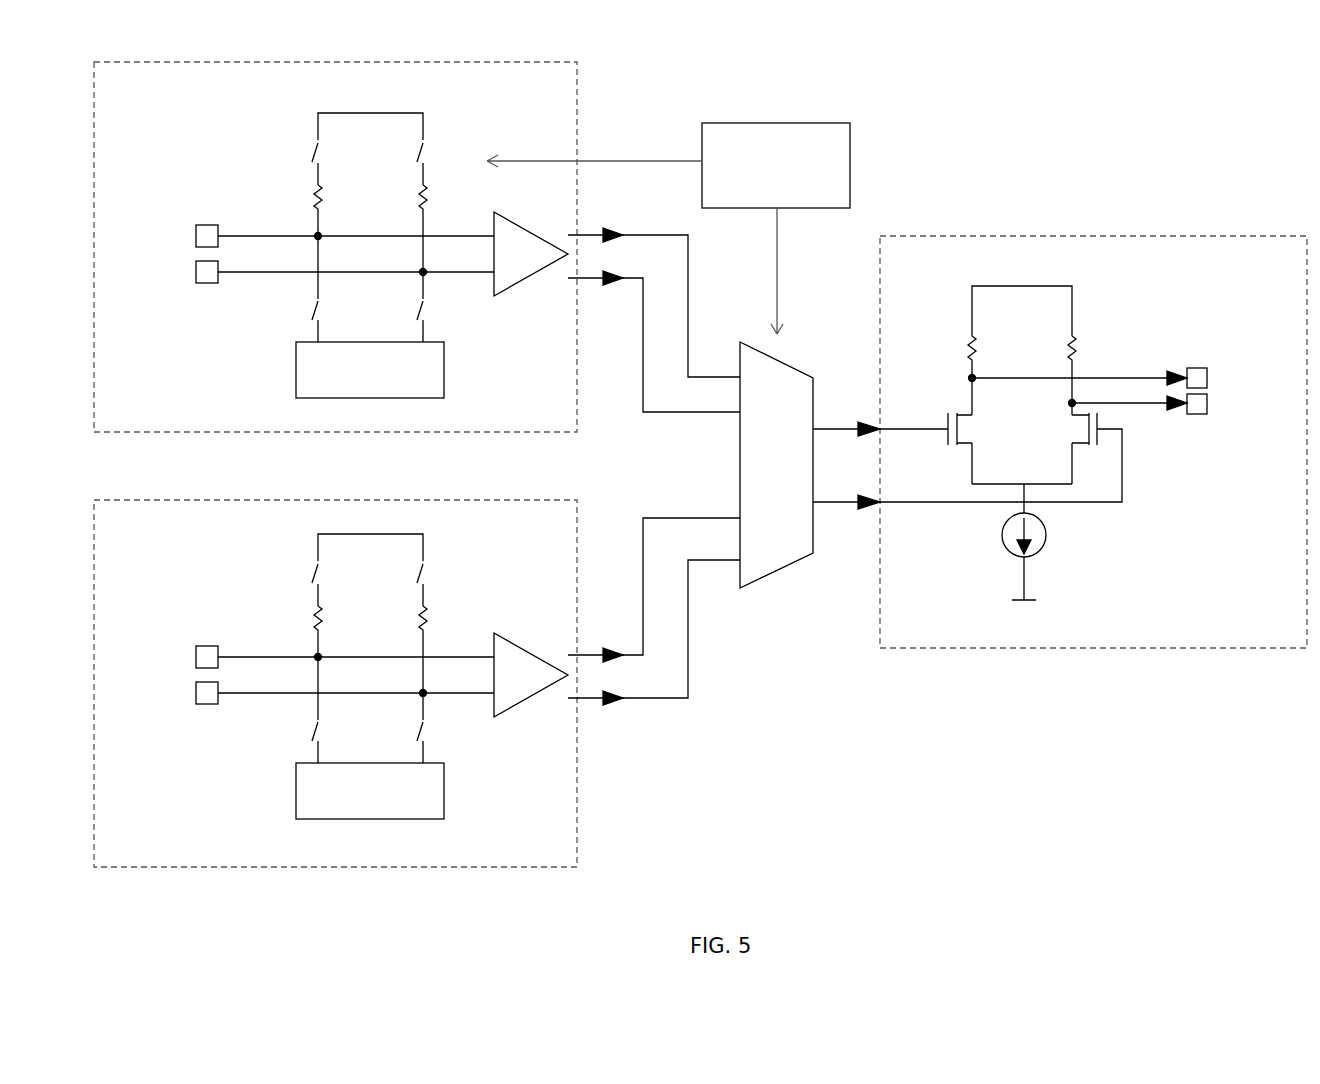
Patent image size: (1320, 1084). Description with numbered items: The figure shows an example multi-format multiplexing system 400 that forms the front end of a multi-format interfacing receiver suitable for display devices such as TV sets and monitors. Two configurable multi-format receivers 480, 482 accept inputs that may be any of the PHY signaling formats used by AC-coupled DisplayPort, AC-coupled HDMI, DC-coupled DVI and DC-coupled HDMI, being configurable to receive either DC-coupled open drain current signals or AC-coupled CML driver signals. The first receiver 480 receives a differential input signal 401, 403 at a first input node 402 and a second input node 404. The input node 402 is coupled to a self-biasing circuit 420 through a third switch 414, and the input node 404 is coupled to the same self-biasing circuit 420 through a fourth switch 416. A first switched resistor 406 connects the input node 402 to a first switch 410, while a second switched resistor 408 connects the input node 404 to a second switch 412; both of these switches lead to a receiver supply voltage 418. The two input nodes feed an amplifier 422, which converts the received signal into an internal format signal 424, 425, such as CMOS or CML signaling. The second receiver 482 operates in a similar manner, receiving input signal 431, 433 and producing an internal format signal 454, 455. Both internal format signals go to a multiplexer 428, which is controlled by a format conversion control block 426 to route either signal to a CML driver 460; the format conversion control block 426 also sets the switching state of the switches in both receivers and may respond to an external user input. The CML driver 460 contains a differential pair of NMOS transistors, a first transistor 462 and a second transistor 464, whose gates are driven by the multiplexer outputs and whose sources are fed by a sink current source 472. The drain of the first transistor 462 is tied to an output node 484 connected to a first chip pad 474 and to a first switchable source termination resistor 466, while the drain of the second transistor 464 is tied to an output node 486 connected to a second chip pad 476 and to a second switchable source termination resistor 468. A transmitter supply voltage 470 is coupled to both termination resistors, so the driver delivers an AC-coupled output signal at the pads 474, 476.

The multi-format multiplexing system 400 is at (702, 73).
The differential input signal 401 is at (196, 236).
The first input node 402 is at (316, 234).
The differential input signal 403 is at (198, 283).
The second input node 404 is at (420, 270).
The switched resistor RT1 406 is at (343, 210).
The switched resistor RT2 408 is at (448, 228).
The switch S1 410 is at (353, 164).
The switch S2 412 is at (445, 167).
The switch S3 414 is at (354, 289).
The switch S4 416 is at (468, 307).
The supply voltage VRX 418 is at (370, 114).
The self-biasing circuit 420 is at (446, 370).
The amplifier 422 is at (531, 254).
The internal format signal 424 is at (654, 290).
The internal format signal 425 is at (654, 328).
The format conversion control block 426 is at (851, 178).
The multiplexer 428 is at (776, 465).
The input signal 431 is at (196, 656).
The input signal 433 is at (198, 704).
The internal format signal 454 is at (654, 590).
The internal format signal 455 is at (654, 632).
The CML driver 460 is at (1105, 648).
The NMOS transistor M1 462 is at (948, 431).
The NMOS transistor M2 464 is at (1001, 452).
The switchable source termination resistor RTa 466 is at (996, 360).
The switchable source termination resistor RTb 468 is at (1096, 369).
The supply voltage VTX 470 is at (1029, 298).
The current source Isink 472 is at (1032, 542).
The output pad DON 474 is at (1207, 371).
The output pad DOP 476 is at (1207, 414).
The configurable multi-format receiver 480 is at (268, 432).
The configurable multi-format receiver 482 is at (268, 867).
The output node 484 is at (970, 377).
The output node 486 is at (1074, 405).